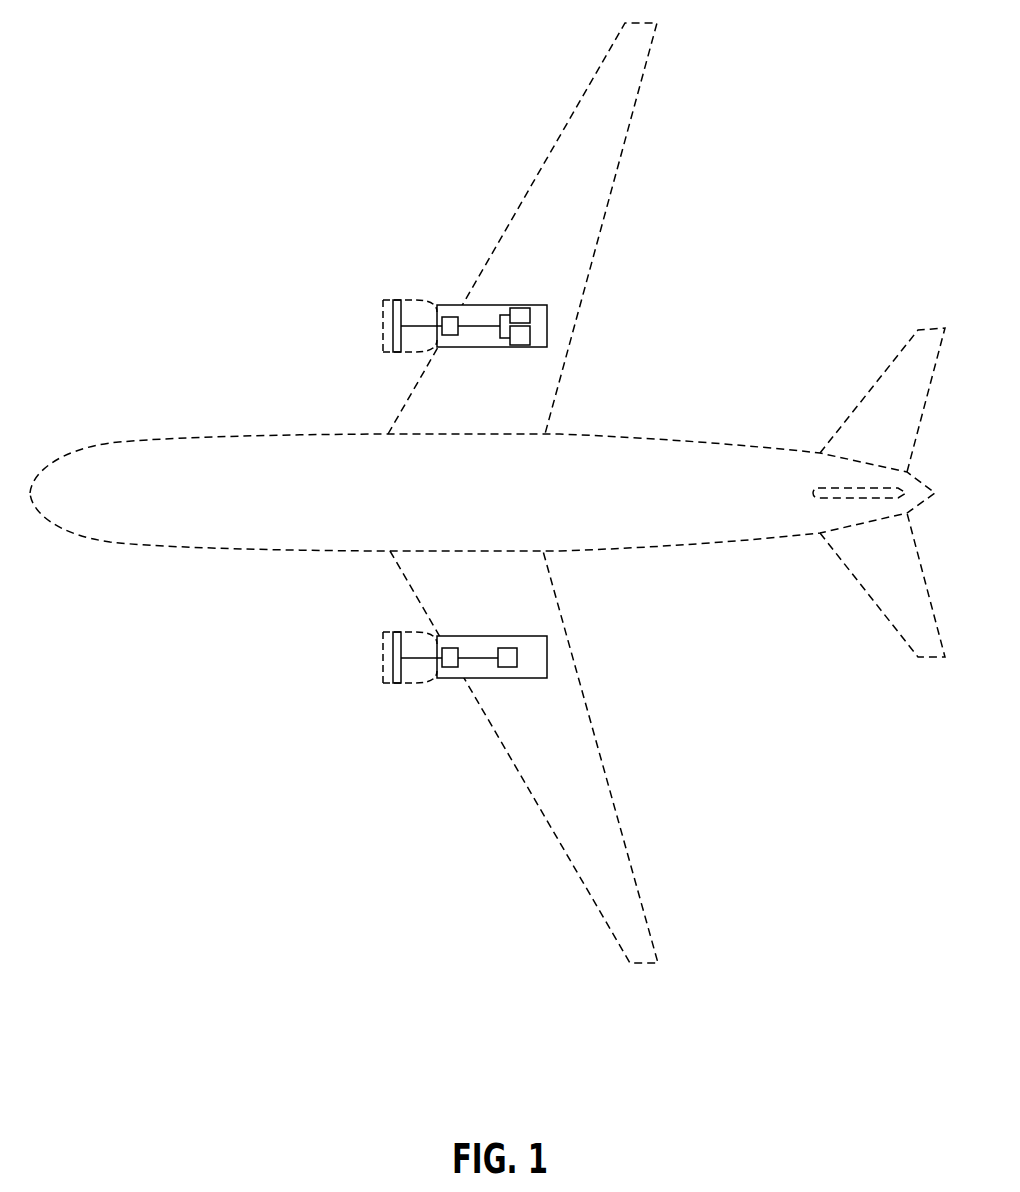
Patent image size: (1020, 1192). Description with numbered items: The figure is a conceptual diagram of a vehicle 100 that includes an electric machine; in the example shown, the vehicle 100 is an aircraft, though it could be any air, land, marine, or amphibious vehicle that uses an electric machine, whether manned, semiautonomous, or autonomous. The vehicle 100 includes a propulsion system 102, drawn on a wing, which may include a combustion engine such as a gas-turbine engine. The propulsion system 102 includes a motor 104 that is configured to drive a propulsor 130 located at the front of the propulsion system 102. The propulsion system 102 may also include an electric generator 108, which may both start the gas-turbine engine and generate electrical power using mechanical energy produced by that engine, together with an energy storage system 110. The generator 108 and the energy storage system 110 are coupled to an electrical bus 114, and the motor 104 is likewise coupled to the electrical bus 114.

The vehicle 100 is at (803, 118).
The propulsion system 102 is at (442, 313).
The motor 104 is at (448, 336).
The electric generator 108 is at (532, 337).
The energy storage system 110 is at (517, 308).
The electrical bus 114 is at (491, 327).
The propulsor 130 is at (390, 362).